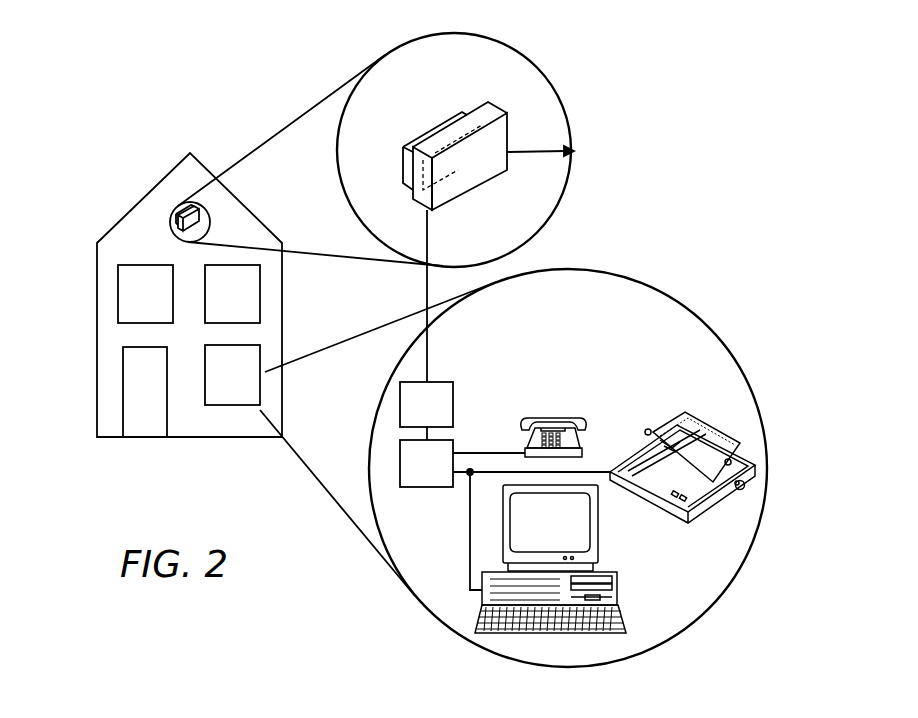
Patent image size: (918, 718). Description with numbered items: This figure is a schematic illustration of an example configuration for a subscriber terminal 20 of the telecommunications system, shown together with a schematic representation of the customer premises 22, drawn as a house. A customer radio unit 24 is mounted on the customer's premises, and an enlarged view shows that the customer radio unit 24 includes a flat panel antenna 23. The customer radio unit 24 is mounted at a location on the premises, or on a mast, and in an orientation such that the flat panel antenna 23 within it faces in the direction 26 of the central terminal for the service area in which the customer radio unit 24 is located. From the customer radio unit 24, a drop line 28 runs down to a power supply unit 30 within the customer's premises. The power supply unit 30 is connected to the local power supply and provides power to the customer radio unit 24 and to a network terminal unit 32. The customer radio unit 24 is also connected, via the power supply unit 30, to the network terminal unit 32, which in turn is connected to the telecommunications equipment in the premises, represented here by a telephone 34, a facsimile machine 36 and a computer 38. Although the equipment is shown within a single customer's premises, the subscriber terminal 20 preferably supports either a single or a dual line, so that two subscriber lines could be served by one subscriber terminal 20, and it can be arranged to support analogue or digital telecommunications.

The subscriber terminal 20 is at (688, 172).
The customer premises 22 is at (141, 201).
The flat panel antenna 23 is at (423, 199).
The customer radio unit 24 is at (490, 110).
The direction 26 is at (525, 151).
The drop line 28 is at (427, 283).
The power supply unit 30 is at (455, 403).
The network terminal unit 32 is at (427, 488).
The telephone 34 is at (564, 416).
The facsimile machine 36 is at (660, 506).
The computer 38 is at (618, 590).